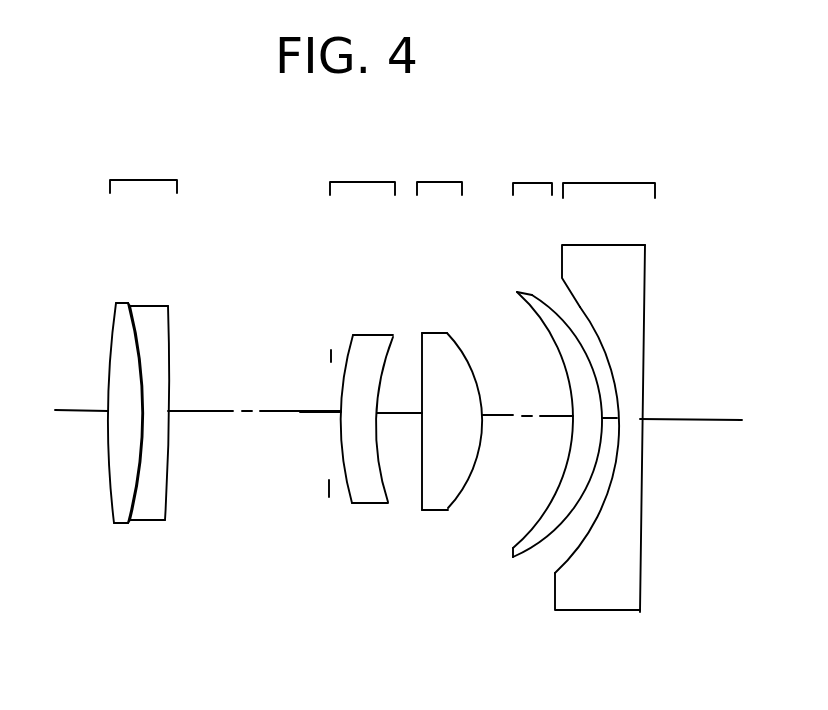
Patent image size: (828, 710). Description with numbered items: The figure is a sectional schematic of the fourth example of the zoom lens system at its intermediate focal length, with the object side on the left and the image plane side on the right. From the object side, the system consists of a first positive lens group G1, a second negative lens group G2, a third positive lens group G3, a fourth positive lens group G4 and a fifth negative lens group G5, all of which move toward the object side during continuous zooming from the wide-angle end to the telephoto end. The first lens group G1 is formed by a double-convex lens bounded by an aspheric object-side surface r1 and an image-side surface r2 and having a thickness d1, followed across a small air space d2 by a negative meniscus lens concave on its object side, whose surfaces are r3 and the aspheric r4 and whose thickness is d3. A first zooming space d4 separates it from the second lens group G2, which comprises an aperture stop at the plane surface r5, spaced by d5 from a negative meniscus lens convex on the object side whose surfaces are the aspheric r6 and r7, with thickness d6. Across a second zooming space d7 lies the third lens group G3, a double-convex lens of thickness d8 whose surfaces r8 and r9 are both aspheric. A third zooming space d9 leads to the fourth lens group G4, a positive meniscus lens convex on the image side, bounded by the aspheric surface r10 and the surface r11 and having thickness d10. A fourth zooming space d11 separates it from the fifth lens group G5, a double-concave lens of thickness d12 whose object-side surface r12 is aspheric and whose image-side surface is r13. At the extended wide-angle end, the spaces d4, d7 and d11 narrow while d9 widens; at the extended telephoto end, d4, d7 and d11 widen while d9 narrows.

The radius of curvature of lens surface r1 is at (113, 340).
The radius of curvature of lens surface r2 is at (117, 338).
The radius of curvature of lens surface r3 is at (141, 338).
The radius of curvature of lens surface r4 is at (172, 334).
The radius of curvature of lens surface r5 is at (330, 378).
The radius of curvature of lens surface r6 is at (349, 352).
The radius of curvature of lens surface r7 is at (383, 365).
The radius of curvature of lens surface r8 is at (422, 350).
The radius of curvature of lens surface r9 is at (468, 350).
The radius of curvature of lens surface r10 is at (532, 320).
The radius of curvature of lens surface r11 is at (557, 307).
The radius of curvature of lens surface r12 is at (580, 307).
The radius of curvature of lens surface r13 is at (647, 297).
The separation between adjacent lens surfaces d1 is at (125, 412).
The separation between adjacent lens surfaces d2 is at (140, 423).
The separation between adjacent lens surfaces d3 is at (155, 415).
The first zooming space d4 is at (254, 435).
The separation between adjacent lens surfaces d5 is at (338, 418).
The separation between adjacent lens surfaces d6 is at (367, 419).
The second zooming space d7 is at (399, 436).
The separation between adjacent lens surfaces d8 is at (438, 421).
The third zooming space d9 is at (527, 438).
The separation between adjacent lens surfaces d10 is at (587, 420).
The fourth zooming space d11 is at (608, 418).
The separation between adjacent lens surfaces d12 is at (628, 418).
The first positive lens group G1 is at (143, 164).
The second negative lens group G2 is at (362, 166).
The third positive lens group G3 is at (436, 166).
The fourth positive lens group G4 is at (528, 167).
The fifth negative lens group G5 is at (609, 169).